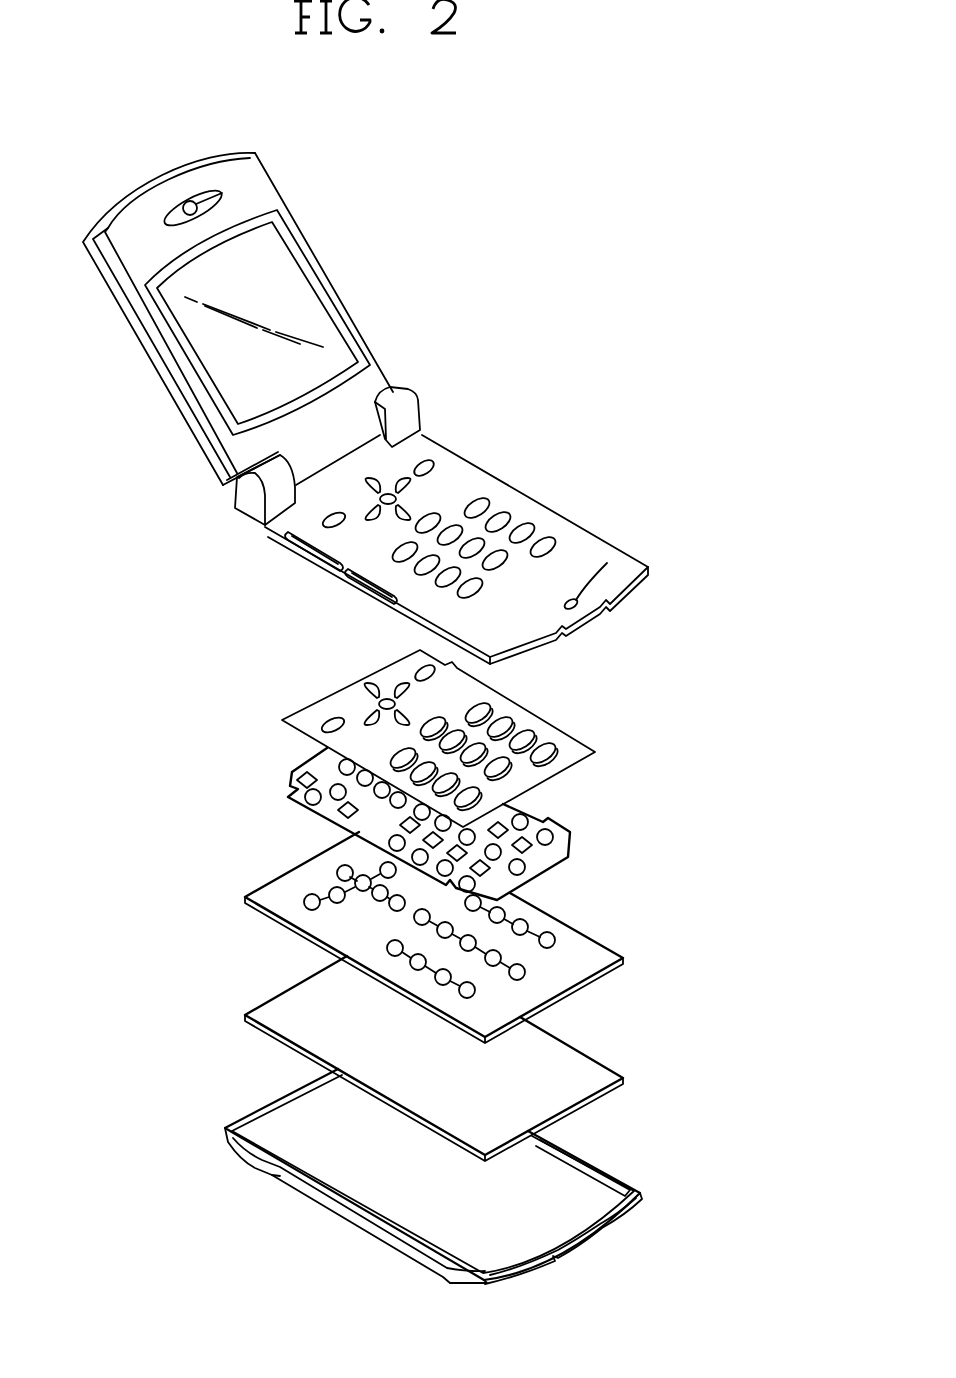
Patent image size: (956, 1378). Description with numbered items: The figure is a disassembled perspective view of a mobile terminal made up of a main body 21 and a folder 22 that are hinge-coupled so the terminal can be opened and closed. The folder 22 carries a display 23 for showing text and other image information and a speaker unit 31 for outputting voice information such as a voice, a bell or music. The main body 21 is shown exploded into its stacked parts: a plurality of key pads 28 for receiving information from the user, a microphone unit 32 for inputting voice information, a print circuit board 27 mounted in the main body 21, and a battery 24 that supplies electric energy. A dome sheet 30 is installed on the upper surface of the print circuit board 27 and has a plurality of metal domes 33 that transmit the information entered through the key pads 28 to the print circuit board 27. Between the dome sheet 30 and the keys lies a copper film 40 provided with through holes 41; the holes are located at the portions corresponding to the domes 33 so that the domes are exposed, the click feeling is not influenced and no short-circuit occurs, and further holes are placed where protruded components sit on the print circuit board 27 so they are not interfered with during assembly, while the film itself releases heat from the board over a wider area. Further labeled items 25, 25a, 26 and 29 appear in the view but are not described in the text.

The main body 21 is at (548, 505).
The folder 22 is at (138, 320).
The display 23 is at (287, 270).
The battery 24 is at (337, 1218).
The key pads (keys) 25 is at (490, 487).
The key 25a is at (430, 527).
The rim of lower case 26 is at (593, 1162).
The print circuit board 27 is at (593, 1070).
The key pads 28 is at (530, 733).
The side key 29 is at (310, 562).
The dome sheet 30 is at (587, 947).
The speaker unit 31 is at (205, 196).
The microphone unit 32 is at (607, 563).
The domes 33 is at (520, 927).
The copper film 40 is at (560, 840).
The through holes 41 is at (295, 780).